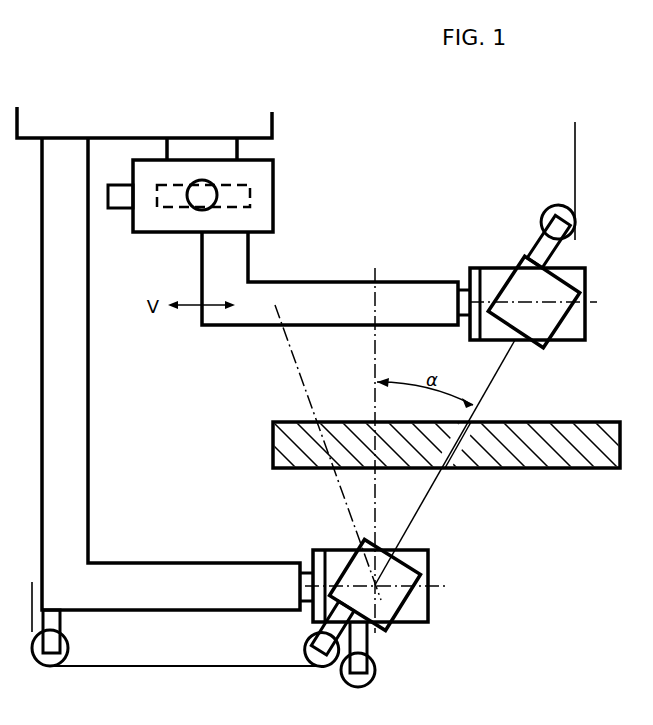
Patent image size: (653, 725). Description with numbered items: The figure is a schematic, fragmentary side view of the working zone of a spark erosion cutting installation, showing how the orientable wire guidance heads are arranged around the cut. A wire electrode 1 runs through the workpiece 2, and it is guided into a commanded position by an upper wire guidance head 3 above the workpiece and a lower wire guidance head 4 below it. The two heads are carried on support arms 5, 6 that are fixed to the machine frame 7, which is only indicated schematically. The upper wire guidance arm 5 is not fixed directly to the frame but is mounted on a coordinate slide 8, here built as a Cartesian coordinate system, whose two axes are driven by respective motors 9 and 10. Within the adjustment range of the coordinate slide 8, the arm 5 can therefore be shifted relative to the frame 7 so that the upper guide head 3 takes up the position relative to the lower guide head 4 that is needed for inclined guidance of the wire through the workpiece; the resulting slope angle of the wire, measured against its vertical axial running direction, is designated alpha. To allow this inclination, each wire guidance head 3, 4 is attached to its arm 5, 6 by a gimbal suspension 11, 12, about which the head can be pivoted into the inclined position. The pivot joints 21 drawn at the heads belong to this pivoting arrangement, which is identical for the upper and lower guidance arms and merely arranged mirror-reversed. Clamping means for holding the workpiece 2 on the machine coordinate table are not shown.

The wire electrode 1 is at (575, 165).
The workpiece 2 is at (308, 432).
The upper wire guidance head 3 is at (546, 333).
The lower wire guidance head 4 is at (386, 619).
The upper wire guidance arm 5 is at (239, 321).
The lower support arm 6 is at (174, 572).
The machine frame 7 is at (258, 121).
The coordinate slide 8 is at (260, 224).
The motor 9 is at (119, 201).
The motor 10 is at (195, 201).
The gimbal suspension 11 is at (492, 282).
The gimbal suspension 12 is at (334, 560).
The pivot joint 21 is at (541, 219).